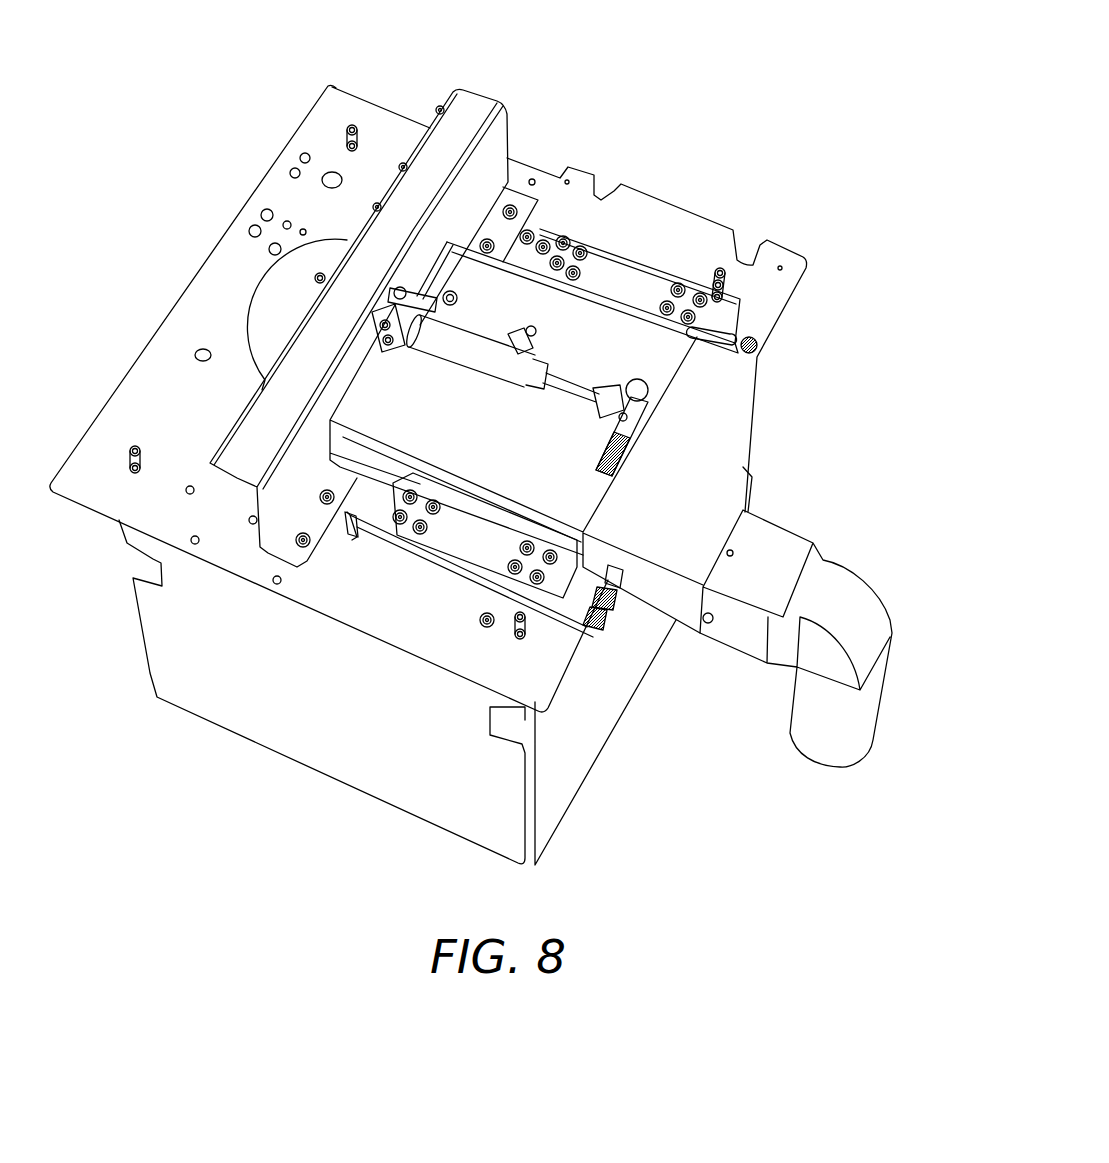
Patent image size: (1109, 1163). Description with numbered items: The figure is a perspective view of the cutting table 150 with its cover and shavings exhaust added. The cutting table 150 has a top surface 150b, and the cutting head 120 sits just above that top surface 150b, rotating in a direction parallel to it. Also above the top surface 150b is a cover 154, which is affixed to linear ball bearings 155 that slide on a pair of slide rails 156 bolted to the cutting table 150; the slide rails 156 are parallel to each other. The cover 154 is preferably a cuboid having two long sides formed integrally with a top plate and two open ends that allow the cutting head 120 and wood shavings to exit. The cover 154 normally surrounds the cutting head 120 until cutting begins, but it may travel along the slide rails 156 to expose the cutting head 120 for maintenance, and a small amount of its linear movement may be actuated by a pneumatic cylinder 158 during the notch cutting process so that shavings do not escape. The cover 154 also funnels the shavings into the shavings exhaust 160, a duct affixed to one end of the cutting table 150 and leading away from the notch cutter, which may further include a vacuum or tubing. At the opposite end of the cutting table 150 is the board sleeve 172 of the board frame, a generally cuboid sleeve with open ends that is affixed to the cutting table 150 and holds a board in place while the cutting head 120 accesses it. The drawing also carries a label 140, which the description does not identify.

The cutting head 120 is at (261, 301).
The housing 140 is at (111, 693).
The cutting table 150 is at (141, 348).
The top surface 150b is at (207, 432).
The cover 154 is at (603, 337).
The linear ball bearings 155 is at (636, 268).
The slide rails 156 is at (724, 336).
The pneumatic cylinder 158 is at (470, 338).
The shavings exhaust 160 is at (812, 490).
The board sleeve 172 is at (474, 112).